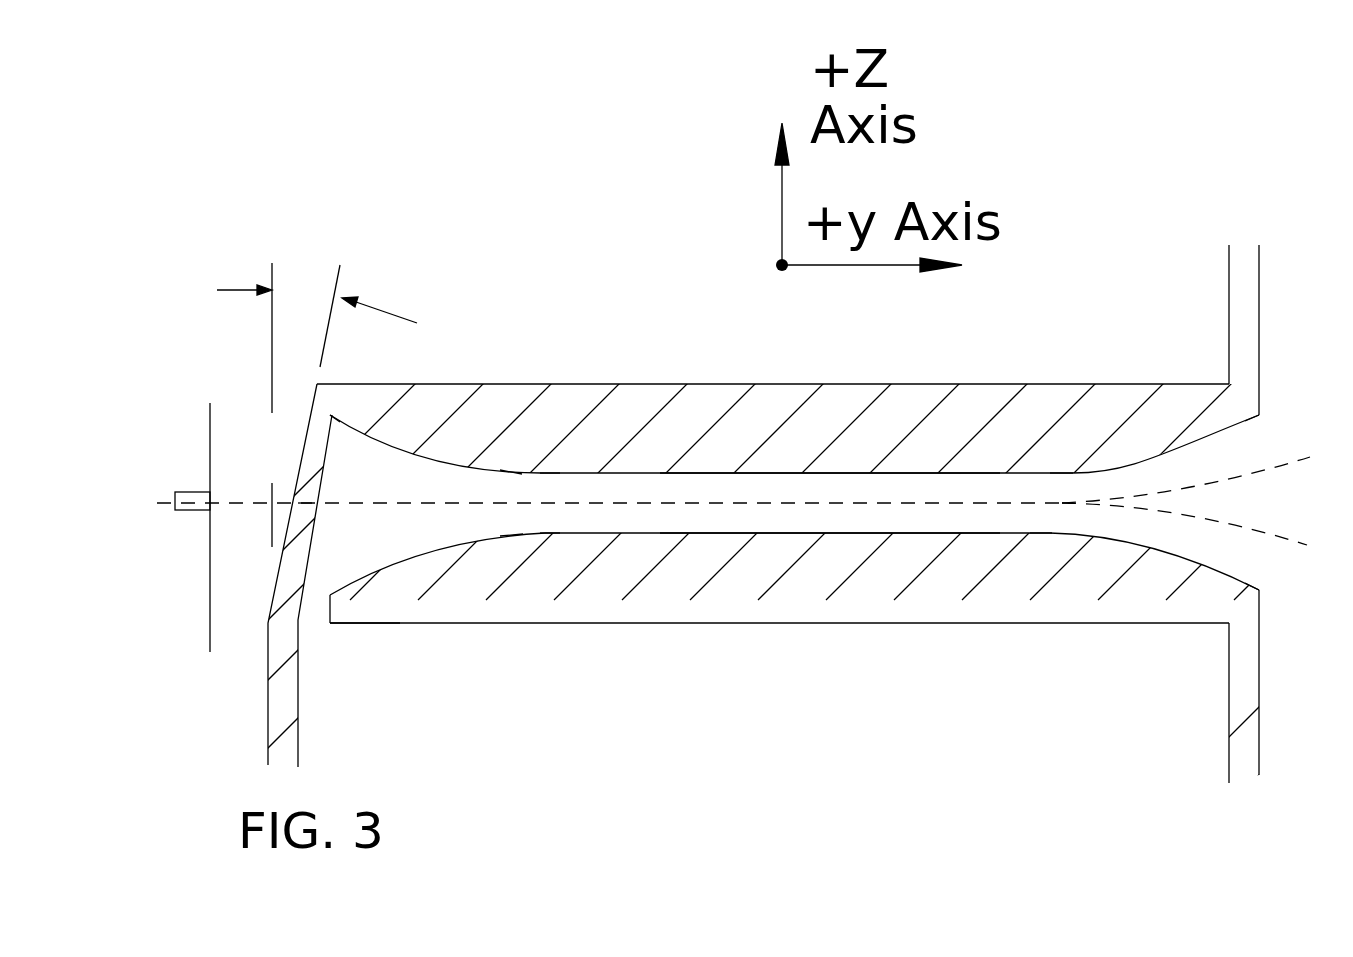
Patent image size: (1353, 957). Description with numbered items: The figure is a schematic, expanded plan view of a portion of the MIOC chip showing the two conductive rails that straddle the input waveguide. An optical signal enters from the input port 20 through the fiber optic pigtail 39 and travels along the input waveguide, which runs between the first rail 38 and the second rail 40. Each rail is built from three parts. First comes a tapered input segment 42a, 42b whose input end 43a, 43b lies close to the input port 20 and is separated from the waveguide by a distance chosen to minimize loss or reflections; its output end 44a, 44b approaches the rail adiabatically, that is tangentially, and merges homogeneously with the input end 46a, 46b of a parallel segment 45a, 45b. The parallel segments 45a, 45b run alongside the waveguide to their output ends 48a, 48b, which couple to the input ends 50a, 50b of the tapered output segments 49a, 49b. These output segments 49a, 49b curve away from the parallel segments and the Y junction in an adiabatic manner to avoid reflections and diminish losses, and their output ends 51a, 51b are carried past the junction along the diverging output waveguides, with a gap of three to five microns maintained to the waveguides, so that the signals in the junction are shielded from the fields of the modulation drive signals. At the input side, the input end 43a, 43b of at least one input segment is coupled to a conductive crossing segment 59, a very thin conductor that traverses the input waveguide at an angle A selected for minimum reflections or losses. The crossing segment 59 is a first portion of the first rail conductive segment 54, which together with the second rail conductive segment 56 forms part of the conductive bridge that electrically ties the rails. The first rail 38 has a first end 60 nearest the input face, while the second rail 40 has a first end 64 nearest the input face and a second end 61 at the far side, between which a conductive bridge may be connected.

The input port 20 is at (217, 508).
The first rail 38 is at (890, 381).
The fiber optic pigtail 39 is at (183, 508).
The second rail 40 is at (772, 627).
The tapered input segment of first rail 42a is at (400, 446).
The tapered input segment of second rail 42b is at (395, 570).
The input end of first tapered input segment 43a is at (333, 423).
The input end of second tapered input segment 43b is at (331, 583).
The output end of first tapered input segment 44a is at (522, 478).
The output end of second tapered input segment 44b is at (523, 533).
The parallel segment of first rail 45a is at (852, 477).
The parallel segment of second rail 45b is at (937, 530).
The input end of first parallel segment 46a is at (543, 475).
The input end of second parallel segment 46b is at (545, 533).
The output end of first parallel segment 48a is at (1060, 475).
The output end of second parallel segment 48b is at (1050, 533).
The tapered output segment of first rail 49a is at (1177, 455).
The tapered output segment of second rail 49b is at (1178, 552).
The input end of first tapered output segment 50a is at (1070, 475).
The input end of second tapered output segment 50b is at (1067, 535).
The output end of first tapered output segment 51a is at (1262, 418).
The output end of second tapered output segment 51b is at (1258, 588).
The first rail conductive segment 54 is at (305, 728).
The second rail conductive segment 56 is at (1223, 748).
The conductive crossing segment 59 is at (297, 484).
The first end of first rail 60 is at (338, 368).
The second end of second rail 61 is at (1197, 633).
The first end of second rail 64 is at (363, 623).